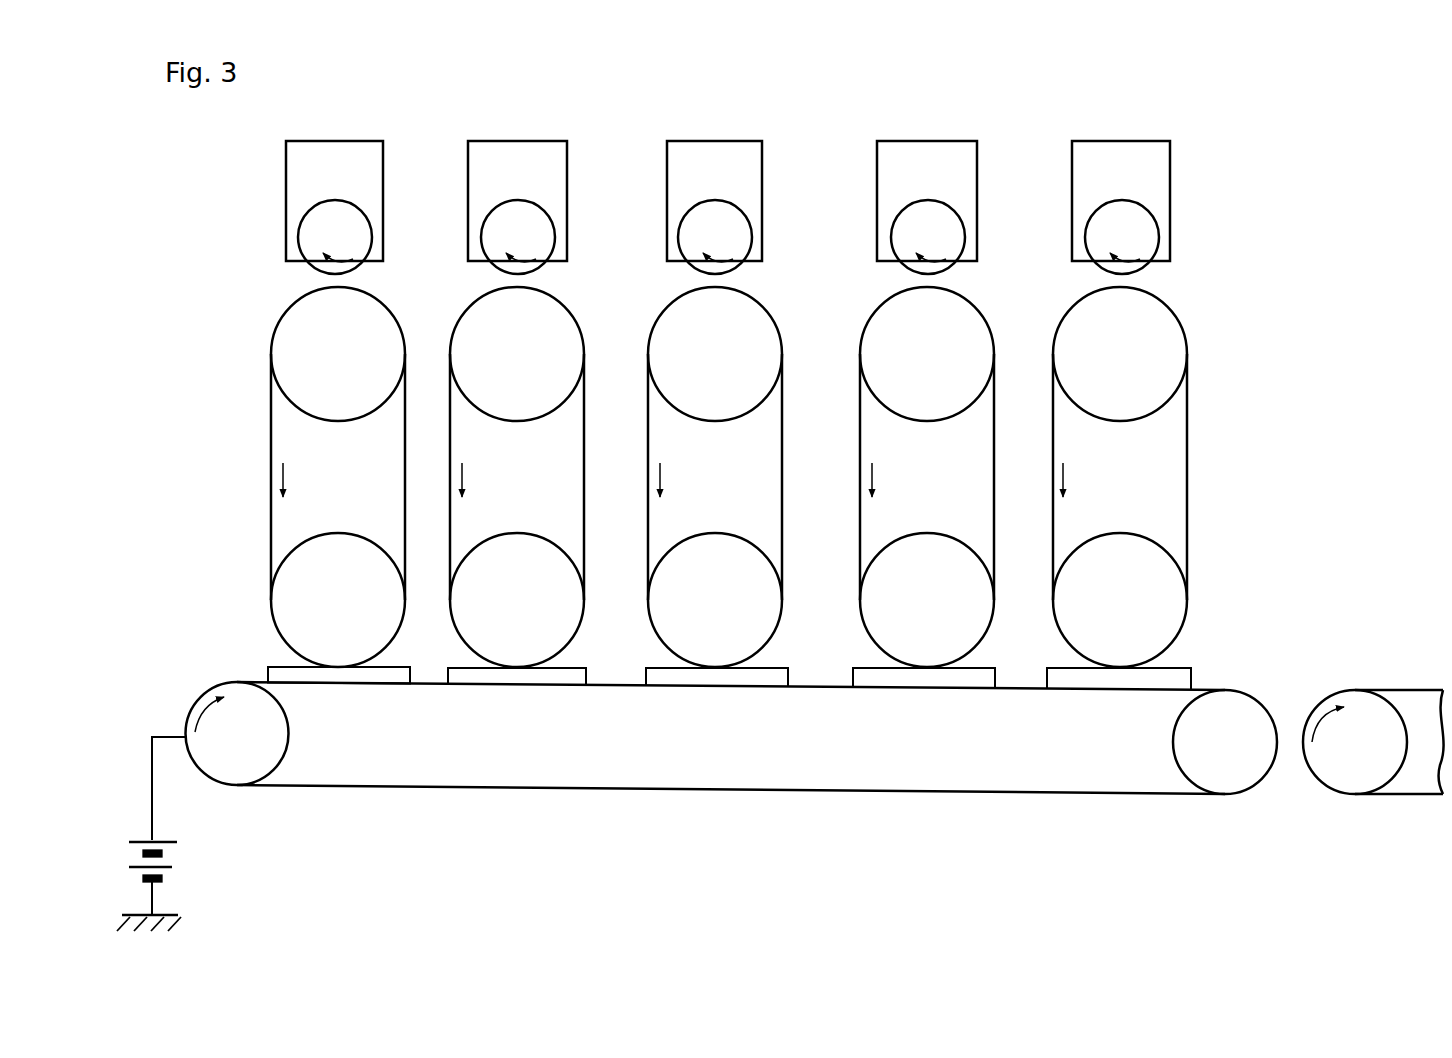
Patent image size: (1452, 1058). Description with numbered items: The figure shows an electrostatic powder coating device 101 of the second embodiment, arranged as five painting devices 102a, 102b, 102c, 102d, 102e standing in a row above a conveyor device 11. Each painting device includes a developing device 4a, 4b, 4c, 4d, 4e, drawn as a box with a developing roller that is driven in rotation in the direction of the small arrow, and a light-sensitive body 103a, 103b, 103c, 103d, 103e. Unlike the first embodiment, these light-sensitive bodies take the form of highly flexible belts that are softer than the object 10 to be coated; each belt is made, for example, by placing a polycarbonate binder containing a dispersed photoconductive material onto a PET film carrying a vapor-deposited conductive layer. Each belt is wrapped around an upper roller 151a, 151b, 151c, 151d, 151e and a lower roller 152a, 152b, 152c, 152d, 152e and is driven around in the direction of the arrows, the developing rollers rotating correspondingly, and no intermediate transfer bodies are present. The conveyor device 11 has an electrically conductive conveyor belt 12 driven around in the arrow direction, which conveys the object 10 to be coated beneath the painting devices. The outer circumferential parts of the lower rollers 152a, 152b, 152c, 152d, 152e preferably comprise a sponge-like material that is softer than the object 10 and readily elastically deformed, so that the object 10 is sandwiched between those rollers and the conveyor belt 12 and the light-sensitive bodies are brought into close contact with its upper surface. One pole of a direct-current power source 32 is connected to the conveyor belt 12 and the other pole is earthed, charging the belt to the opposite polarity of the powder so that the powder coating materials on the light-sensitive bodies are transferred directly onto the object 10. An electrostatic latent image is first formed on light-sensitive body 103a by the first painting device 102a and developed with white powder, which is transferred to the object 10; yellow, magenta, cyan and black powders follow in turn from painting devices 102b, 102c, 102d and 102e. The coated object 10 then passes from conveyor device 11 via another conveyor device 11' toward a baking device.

The developing device 4a is at (300, 198).
The developing device 4b is at (490, 198).
The developing device 4c is at (685, 197).
The developing device 4d is at (895, 196).
The developing device 4e is at (1088, 197).
The electrostatic powder coating device 101 is at (1145, 207).
The first painting device 102a is at (283, 472).
The second painting device 102b is at (489, 502).
The third painting device 102c is at (679, 502).
The fourth painting device 102d is at (885, 502).
The fifth painting device 102e is at (1143, 462).
The roller 151a is at (298, 352).
The roller 151b is at (518, 402).
The roller 151c is at (716, 402).
The roller 151d is at (928, 402).
The roller 151e is at (1158, 331).
The light-sensitive body 103a is at (271, 447).
The light-sensitive body 103b is at (583, 503).
The light-sensitive body 103c is at (650, 525).
The light-sensitive body 103d is at (862, 525).
The light-sensitive body 103e is at (1187, 456).
The roller 152a is at (298, 594).
The roller 152b is at (518, 650).
The roller 152c is at (716, 650).
The roller 152d is at (928, 650).
The roller 152e is at (1160, 604).
The object to be coated 10 is at (285, 663).
The conveyor device 11 is at (757, 773).
The another conveyor device 11' is at (1373, 778).
The conveyor belt 12 is at (445, 790).
The direct-current power source 32 is at (172, 862).